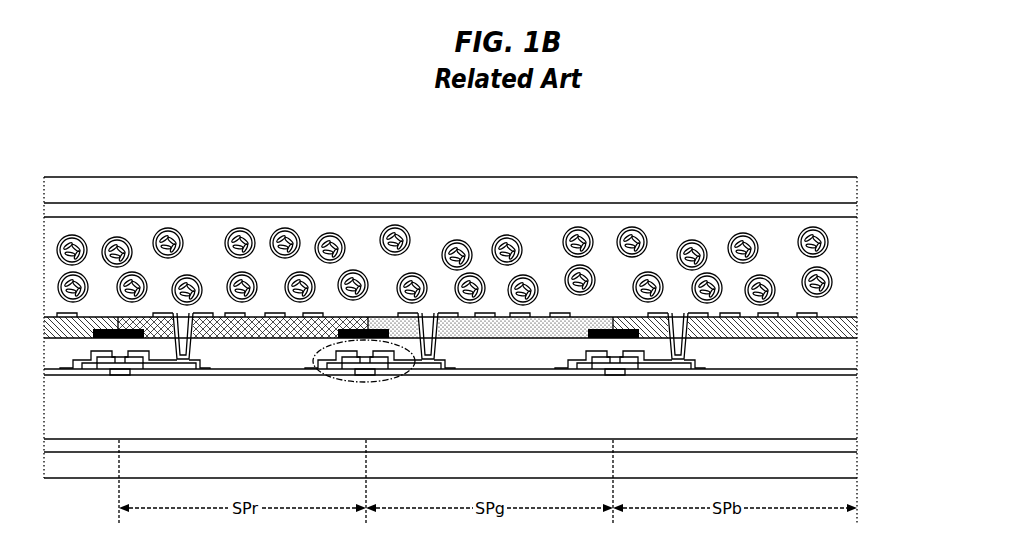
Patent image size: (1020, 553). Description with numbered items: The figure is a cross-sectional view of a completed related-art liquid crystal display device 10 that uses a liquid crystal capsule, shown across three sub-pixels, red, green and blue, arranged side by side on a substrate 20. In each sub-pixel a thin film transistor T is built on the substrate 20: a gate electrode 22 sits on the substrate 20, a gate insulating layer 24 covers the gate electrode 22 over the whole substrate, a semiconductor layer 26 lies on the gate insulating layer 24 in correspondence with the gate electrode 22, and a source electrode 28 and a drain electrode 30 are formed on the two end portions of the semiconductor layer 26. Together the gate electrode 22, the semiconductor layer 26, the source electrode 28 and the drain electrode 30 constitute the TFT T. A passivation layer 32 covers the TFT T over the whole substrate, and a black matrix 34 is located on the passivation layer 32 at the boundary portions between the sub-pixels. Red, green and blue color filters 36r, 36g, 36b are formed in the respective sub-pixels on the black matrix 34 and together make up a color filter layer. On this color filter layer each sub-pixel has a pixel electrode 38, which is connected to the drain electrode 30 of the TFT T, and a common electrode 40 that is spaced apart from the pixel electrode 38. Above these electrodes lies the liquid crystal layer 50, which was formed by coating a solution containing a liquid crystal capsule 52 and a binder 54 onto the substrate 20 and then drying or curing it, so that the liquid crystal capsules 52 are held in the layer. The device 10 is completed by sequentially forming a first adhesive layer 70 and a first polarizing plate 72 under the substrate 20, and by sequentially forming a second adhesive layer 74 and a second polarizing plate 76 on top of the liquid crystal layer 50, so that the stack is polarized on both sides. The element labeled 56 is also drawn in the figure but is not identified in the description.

The liquid crystal display device 10 is at (440, 125).
The substrate 20 is at (800, 416).
The gate electrode 22 is at (365, 377).
The gate insulating layer 24 is at (463, 372).
The semiconductor layer 26 is at (338, 366).
The source electrode 28 is at (320, 369).
The drain electrode 30 is at (430, 364).
The passivation layer 32 is at (500, 362).
The black matrix 34 is at (137, 338).
The red color filter 36r is at (270, 330).
The green color filter 36g is at (530, 335).
The blue color filter 36b is at (720, 330).
The pixel electrode 38 is at (202, 318).
The common electrode 40 is at (238, 318).
The liquid crystal layer 50 is at (925, 248).
The liquid crystal capsule 52 is at (832, 282).
The binder 54 is at (845, 240).
The adhesive layer 56 is at (830, 290).
The first adhesive layer 70 is at (845, 448).
The first polarizing plate 72 is at (845, 468).
The second adhesive layer 74 is at (845, 211).
The second polarizing plate 76 is at (845, 185).
The thin film transistor T is at (393, 380).